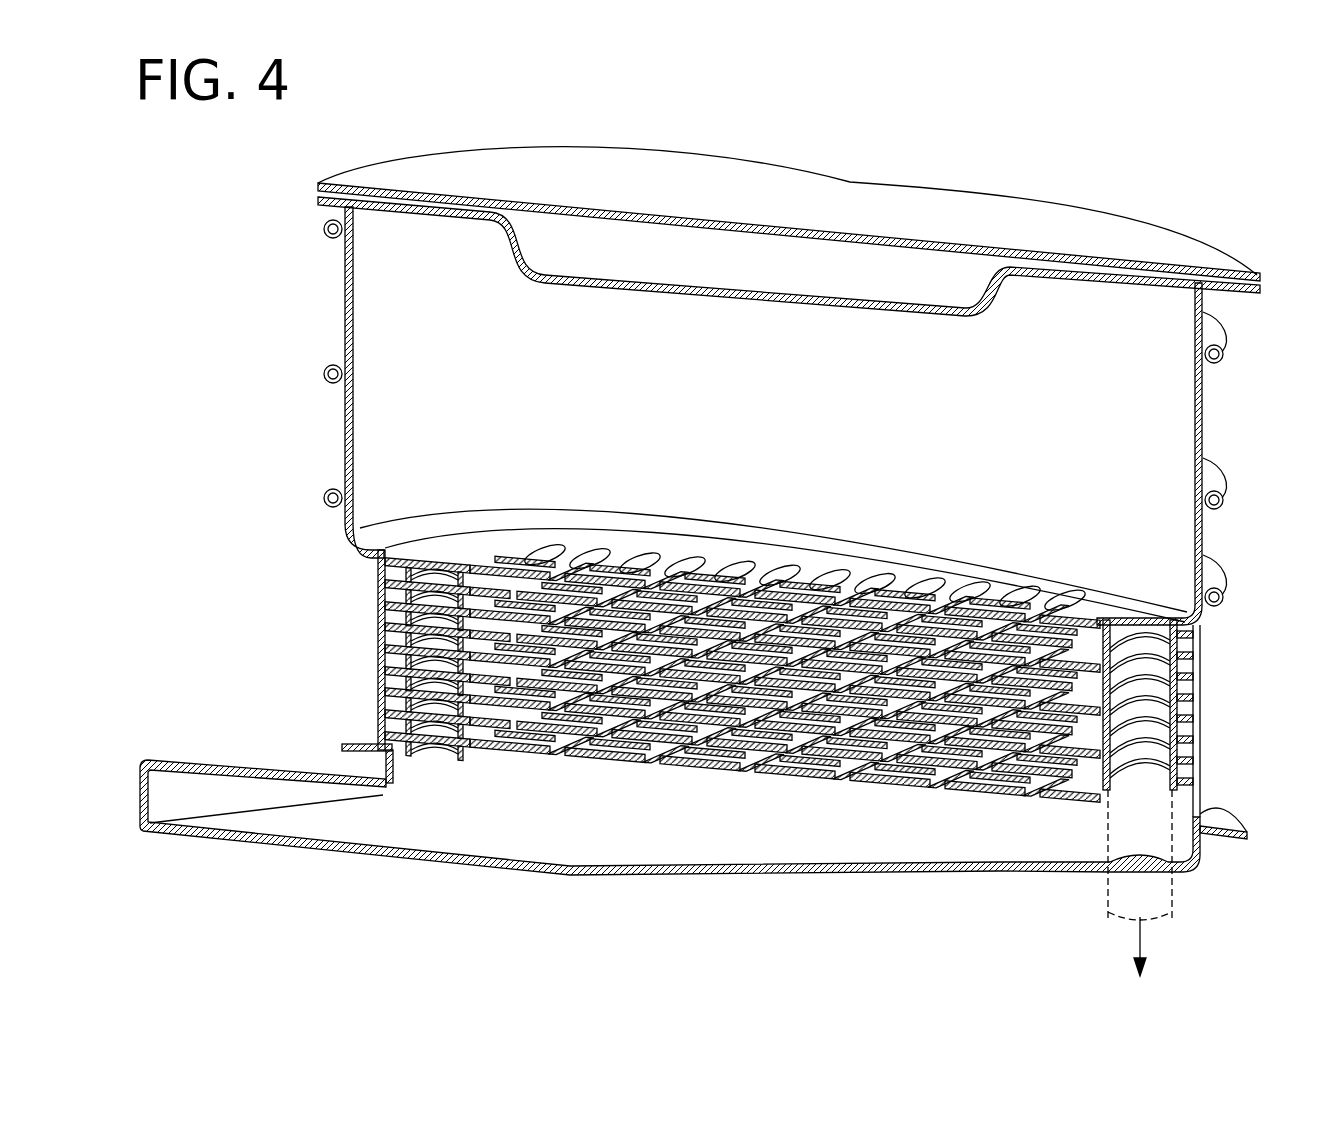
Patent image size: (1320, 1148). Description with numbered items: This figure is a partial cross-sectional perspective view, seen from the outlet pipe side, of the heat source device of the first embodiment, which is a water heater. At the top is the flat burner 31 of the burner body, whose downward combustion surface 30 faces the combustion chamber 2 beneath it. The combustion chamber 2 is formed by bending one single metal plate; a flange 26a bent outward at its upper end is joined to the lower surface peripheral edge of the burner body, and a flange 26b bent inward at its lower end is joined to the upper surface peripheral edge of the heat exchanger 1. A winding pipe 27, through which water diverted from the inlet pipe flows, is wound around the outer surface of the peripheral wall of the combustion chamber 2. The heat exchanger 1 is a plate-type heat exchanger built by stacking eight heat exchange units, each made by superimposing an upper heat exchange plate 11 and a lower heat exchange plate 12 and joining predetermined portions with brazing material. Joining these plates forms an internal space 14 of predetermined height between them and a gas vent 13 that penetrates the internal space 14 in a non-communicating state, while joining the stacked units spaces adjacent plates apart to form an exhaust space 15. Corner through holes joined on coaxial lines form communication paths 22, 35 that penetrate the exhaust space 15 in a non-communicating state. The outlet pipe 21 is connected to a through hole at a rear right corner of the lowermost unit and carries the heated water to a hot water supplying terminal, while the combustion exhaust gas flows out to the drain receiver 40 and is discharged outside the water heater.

The heat exchanger 1 is at (1222, 642).
The combustion chamber 2 is at (758, 411).
The upper heat exchange plate 11 is at (509, 556).
The lower heat exchange plate 12 is at (470, 565).
The gas vent 13 is at (653, 563).
The internal space 14 is at (612, 753).
The exhaust space 15 is at (700, 615).
The outlet pipe 21 is at (1172, 892).
The communication path 22 is at (440, 690).
The flange 26a is at (318, 207).
The flange 26b is at (432, 532).
The winding pipe 27 is at (1226, 497).
The combustion surface 30 is at (882, 308).
The burner 31 is at (957, 268).
The communication path 35 is at (1112, 650).
The drain receiver 40 is at (635, 873).